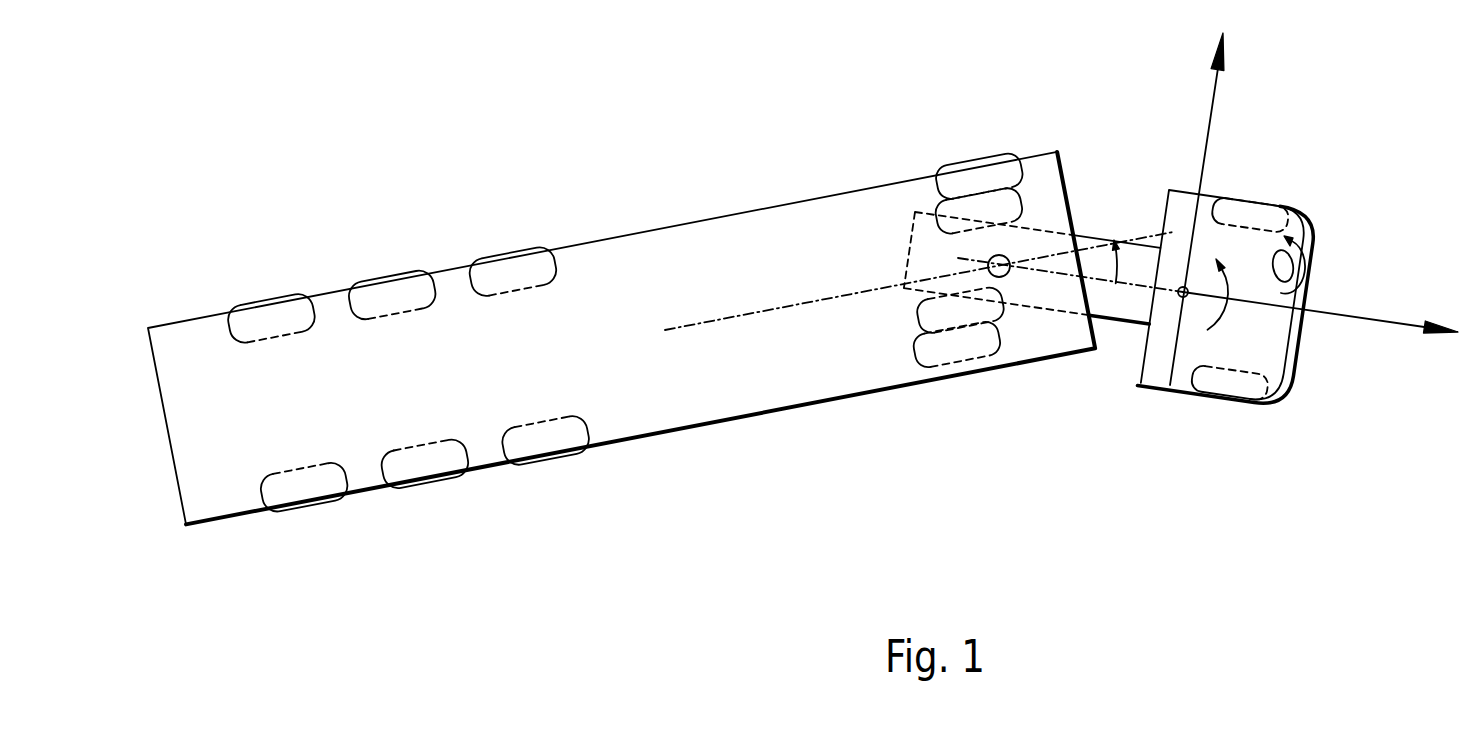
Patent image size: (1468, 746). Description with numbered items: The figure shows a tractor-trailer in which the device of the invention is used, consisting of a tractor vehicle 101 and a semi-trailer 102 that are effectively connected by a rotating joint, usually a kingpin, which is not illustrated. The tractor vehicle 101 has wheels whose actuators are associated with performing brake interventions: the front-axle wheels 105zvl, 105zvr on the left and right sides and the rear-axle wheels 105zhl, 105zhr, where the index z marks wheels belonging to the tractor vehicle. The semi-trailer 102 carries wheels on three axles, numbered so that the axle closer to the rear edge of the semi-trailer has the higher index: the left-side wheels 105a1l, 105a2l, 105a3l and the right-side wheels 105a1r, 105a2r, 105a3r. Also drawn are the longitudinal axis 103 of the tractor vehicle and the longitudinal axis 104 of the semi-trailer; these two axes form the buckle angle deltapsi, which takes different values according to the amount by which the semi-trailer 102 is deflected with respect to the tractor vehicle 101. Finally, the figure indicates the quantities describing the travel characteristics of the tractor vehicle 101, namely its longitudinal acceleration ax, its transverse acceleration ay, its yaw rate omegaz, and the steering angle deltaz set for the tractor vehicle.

The tractor vehicle 101 is at (1300, 396).
The semi-trailer 102 is at (752, 413).
The longitudinal axis of the tractor vehicle 103 is at (1124, 283).
The longitudinal axis of the semi-trailer 104 is at (722, 318).
The semi-trailer wheel, first axle, left side 105a1l is at (515, 264).
The semi-trailer wheel, second axle, left side 105a2l is at (392, 285).
The semi-trailer wheel, third axle, left side 105a3l is at (268, 312).
The semi-trailer wheel, first axle, right side 105a1r is at (547, 448).
The semi-trailer wheel, second axle, right side 105a2r is at (423, 470).
The semi-trailer wheel, third axle, right side 105a3r is at (305, 493).
The tractor vehicle wheel, rear axle, left side 105zhl is at (960, 162).
The tractor vehicle wheel, rear axle, right side 105zhr is at (972, 348).
The tractor vehicle wheel, front axle, left side 105zvl is at (1282, 203).
The tractor vehicle wheel, front axle, right side 105zvr is at (1203, 400).
The buckle angle deltapsi is at (1093, 262).
The yaw rate omegaz is at (1170, 386).
The steering angle deltaz is at (1272, 266).
The longitudinal acceleration ax is at (1208, 315).
The transverse acceleration ay is at (1217, 209).